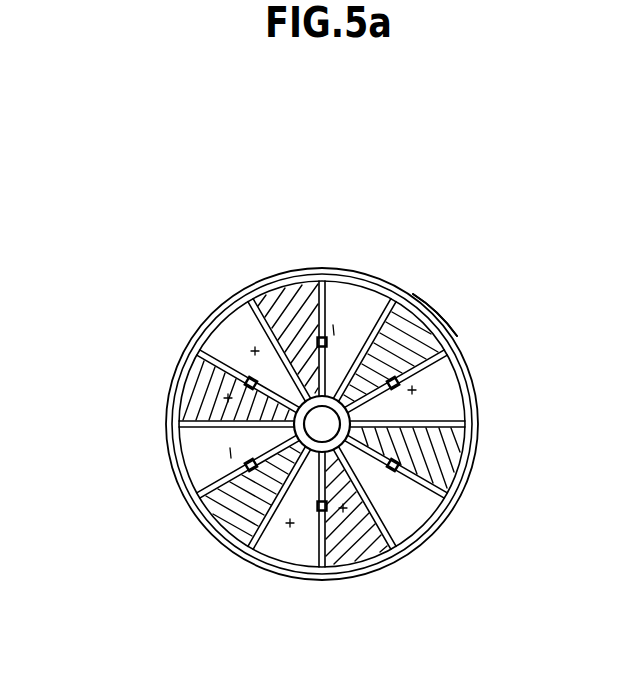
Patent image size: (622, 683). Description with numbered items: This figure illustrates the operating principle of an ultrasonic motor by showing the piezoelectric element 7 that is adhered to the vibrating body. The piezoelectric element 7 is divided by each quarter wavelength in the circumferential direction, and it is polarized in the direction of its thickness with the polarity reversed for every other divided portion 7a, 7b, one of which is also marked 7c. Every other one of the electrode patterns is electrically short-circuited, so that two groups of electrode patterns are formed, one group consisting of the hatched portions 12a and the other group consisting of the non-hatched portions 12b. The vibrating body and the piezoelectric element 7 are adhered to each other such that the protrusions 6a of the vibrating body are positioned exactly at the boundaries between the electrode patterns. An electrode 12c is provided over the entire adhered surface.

The piezoelectric element 7 is at (470, 248).
The divided portion 7a is at (253, 284).
The divided portion 7b is at (362, 288).
The compartment 7c is at (438, 328).
The protrusion 6a is at (250, 378).
The hatched portion 12a is at (290, 292).
The non-hatched portion 12b is at (382, 280).
The electrode 12c is at (425, 307).